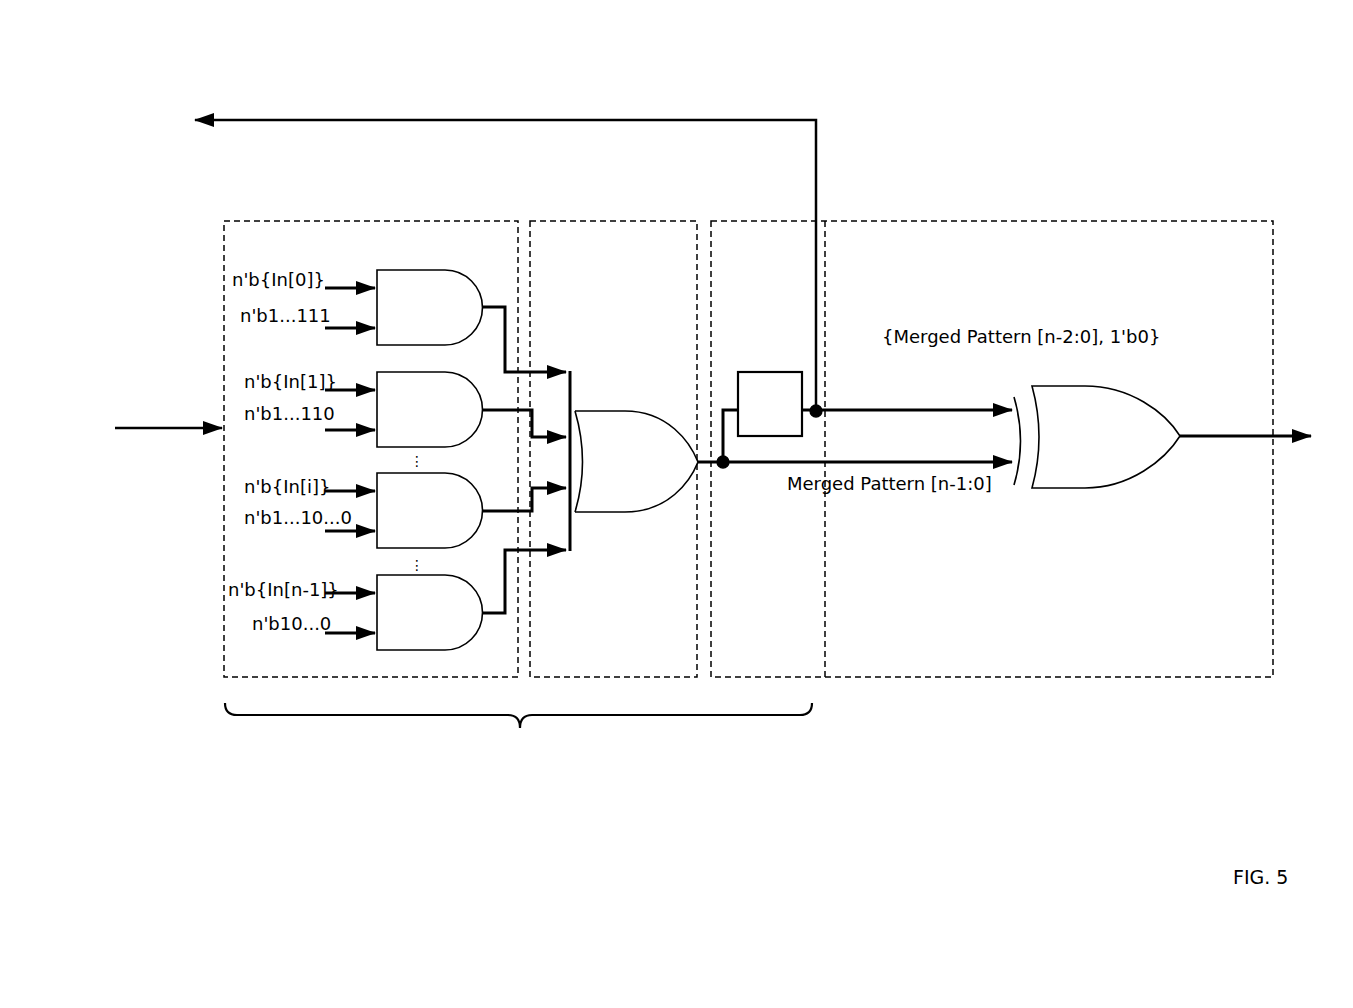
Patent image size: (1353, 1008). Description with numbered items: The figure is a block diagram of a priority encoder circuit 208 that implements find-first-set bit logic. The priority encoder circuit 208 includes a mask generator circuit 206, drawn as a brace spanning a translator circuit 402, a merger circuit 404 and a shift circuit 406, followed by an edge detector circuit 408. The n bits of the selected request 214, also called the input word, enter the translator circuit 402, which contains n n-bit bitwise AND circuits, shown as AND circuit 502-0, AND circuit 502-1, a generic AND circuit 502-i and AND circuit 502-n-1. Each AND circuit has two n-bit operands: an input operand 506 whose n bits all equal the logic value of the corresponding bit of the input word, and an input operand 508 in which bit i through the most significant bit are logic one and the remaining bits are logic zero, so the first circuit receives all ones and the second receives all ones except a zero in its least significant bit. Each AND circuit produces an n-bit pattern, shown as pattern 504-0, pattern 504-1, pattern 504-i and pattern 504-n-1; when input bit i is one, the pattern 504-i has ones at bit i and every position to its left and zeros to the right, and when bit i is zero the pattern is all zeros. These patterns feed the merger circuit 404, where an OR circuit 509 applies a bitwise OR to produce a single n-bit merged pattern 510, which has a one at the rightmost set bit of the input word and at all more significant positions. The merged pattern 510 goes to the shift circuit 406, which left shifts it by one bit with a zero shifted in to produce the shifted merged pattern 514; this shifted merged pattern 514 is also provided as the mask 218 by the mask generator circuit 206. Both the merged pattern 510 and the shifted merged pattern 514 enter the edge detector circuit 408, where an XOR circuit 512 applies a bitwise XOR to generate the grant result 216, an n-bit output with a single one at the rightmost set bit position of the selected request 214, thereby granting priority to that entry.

The priority encoder circuit 208 is at (1178, 150).
The mask generator circuit 206 is at (518, 739).
The selected request 214 is at (157, 428).
The grant result 216 is at (1232, 437).
The mask 218 is at (814, 178).
The translator circuit 402 is at (371, 449).
The merger circuit 404 is at (613, 449).
The shift circuit 406 is at (762, 417).
The edge detector circuit 408 is at (992, 449).
The AND circuit 502-0 is at (429, 307).
The AND circuit 502-1 is at (430, 409).
The AND circuit 502-i is at (430, 510).
The AND circuit 502-n-1 is at (430, 612).
The n-bit pattern 504-0 is at (501, 320).
The n-bit pattern 504-1 is at (511, 422).
The n-bit pattern 504-i is at (507, 518).
The n-bit pattern 504-n-1 is at (503, 623).
The input operand 506 is at (332, 288).
The input operand 508 is at (342, 329).
The OR circuit 509 is at (636, 461).
The merged pattern 510 is at (704, 466).
The XOR circuit 512 is at (1097, 437).
The shifted merged pattern 514 is at (883, 410).